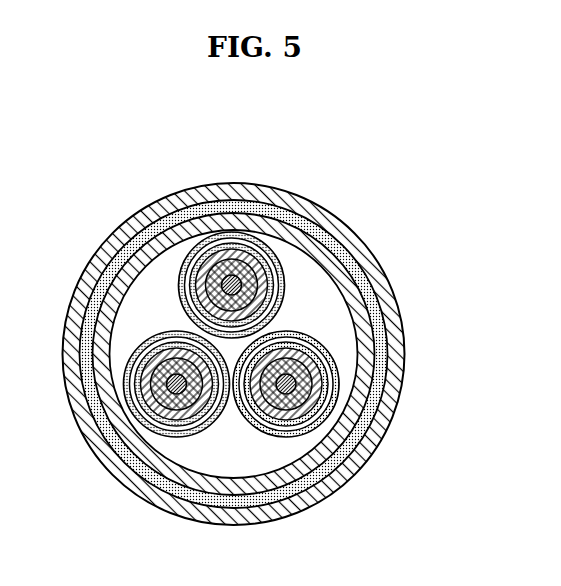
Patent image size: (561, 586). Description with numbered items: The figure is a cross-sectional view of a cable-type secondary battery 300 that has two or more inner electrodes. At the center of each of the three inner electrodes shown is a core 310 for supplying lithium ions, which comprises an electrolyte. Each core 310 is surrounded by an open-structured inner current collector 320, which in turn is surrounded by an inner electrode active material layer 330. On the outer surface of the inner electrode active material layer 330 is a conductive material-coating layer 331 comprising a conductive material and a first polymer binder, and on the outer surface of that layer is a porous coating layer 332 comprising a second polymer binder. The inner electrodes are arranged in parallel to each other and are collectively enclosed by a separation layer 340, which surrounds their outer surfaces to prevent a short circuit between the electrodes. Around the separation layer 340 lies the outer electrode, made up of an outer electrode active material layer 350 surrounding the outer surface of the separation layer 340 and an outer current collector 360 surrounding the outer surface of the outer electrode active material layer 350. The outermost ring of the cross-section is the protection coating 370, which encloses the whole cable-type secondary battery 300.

The cable-type secondary battery 300 is at (130, 165).
The core for supplying lithium ions 310 is at (226, 279).
The inner current collector 320 is at (232, 262).
The inner electrode active material layer 330 is at (245, 262).
The conductive material-coating layer 331 is at (273, 265).
The porous coating layer 332 is at (314, 236).
The separation layer 340 is at (313, 273).
The outer electrode active material layer 350 is at (347, 280).
The outer current collector 360 is at (370, 290).
The protection coating 370 is at (388, 315).